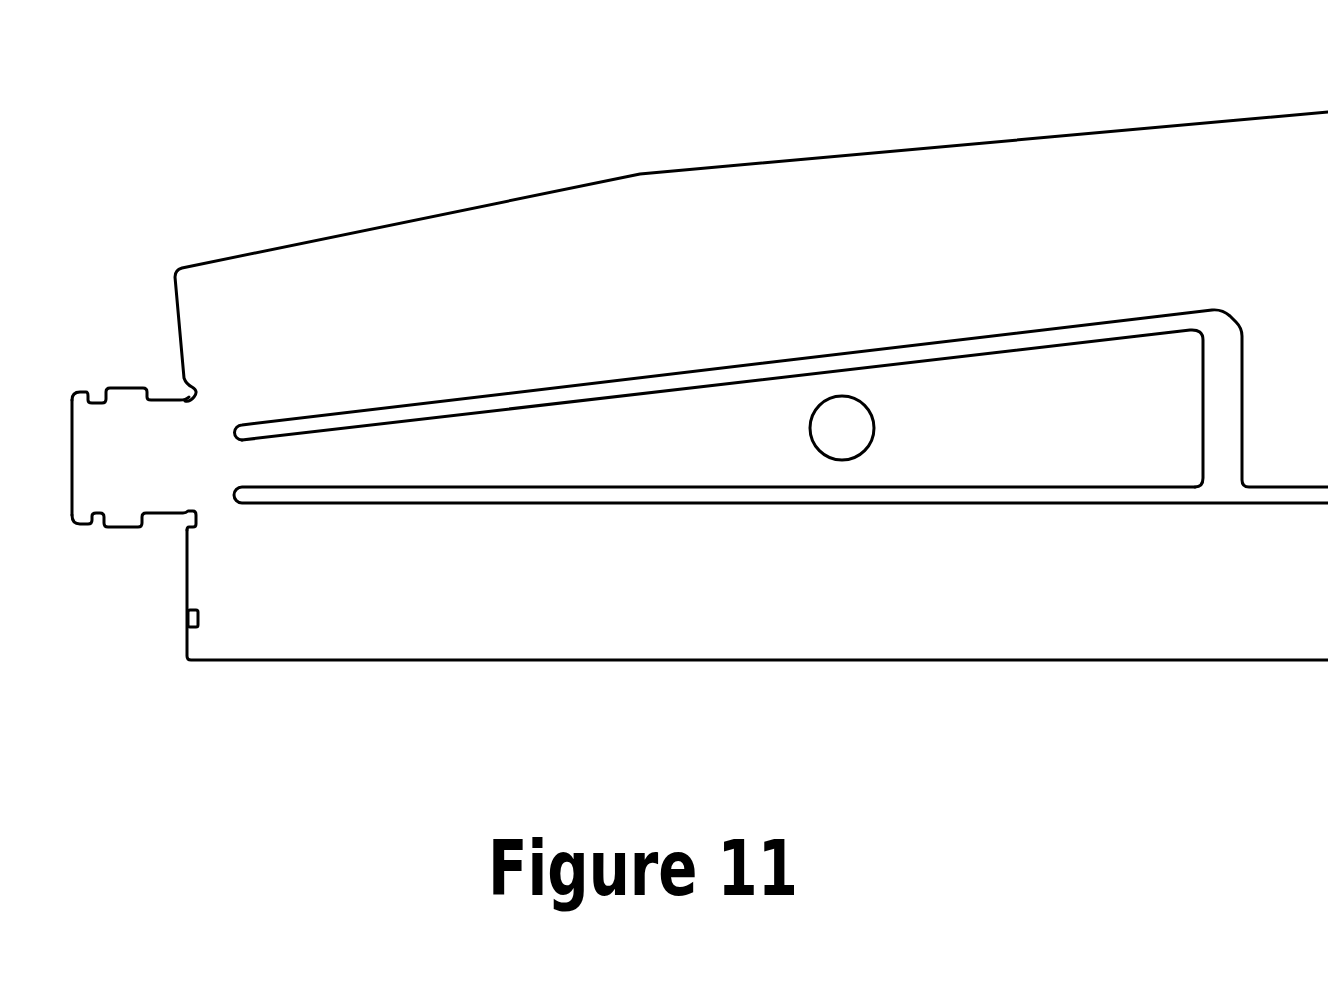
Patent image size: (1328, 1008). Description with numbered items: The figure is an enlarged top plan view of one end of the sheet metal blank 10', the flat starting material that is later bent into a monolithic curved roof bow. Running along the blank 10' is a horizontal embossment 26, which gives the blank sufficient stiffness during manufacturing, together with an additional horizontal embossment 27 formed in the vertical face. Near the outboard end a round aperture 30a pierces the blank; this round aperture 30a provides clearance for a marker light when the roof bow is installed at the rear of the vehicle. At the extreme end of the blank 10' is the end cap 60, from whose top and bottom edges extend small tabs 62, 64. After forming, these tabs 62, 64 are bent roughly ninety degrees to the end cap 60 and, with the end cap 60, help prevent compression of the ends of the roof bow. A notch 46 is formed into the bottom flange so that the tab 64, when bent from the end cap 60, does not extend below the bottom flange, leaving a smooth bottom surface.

The sheet metal blank 10' is at (751, 216).
The horizontal embossment 26 is at (1101, 487).
The additional horizontal embossment 27 is at (932, 347).
The round aperture 30a is at (826, 412).
The notch 46 is at (198, 625).
The end cap 60 is at (155, 455).
The small tab 62 is at (125, 527).
The small tab 64 is at (85, 390).